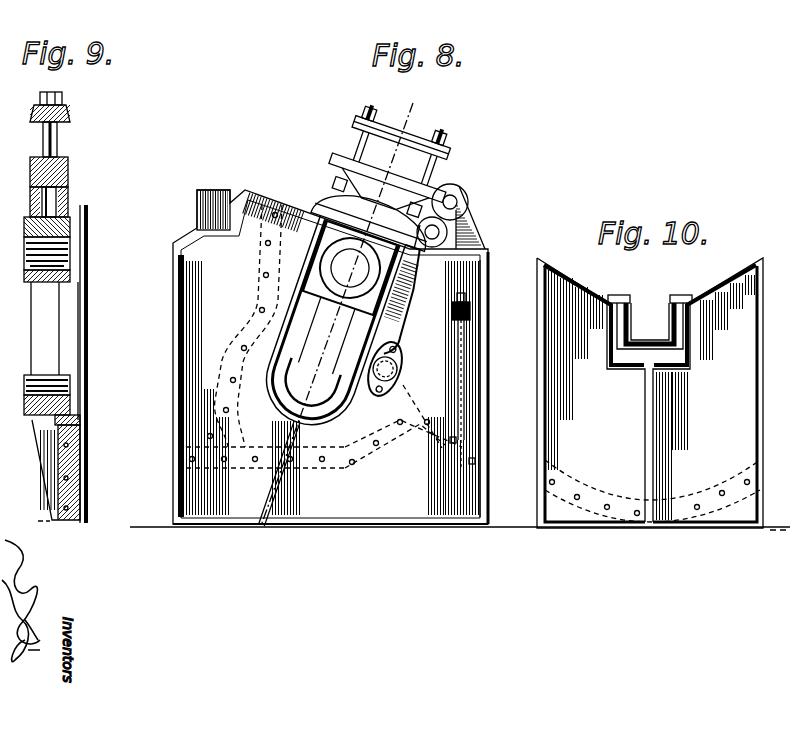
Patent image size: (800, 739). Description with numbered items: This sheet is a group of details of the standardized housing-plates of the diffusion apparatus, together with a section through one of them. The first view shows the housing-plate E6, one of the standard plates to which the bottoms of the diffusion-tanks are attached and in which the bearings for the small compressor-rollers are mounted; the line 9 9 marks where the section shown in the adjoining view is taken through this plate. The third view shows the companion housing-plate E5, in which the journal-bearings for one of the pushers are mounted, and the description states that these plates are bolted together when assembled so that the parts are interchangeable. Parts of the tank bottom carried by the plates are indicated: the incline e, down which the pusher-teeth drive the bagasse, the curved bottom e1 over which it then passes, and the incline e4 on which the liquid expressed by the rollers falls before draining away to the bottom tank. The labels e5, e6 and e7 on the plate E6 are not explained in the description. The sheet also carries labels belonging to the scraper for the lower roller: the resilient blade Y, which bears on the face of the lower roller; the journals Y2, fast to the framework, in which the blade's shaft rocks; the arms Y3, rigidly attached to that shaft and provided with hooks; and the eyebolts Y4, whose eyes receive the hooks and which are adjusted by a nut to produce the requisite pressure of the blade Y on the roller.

In FIG. 8, the section line 9- 9 is at (340, 319).
In FIG. 8, the block at corner of casing e7 is at (214, 192).
In FIG. 8, the resilient blade Y is at (403, 302).
In FIG. 9, the cylinder body / rod e6 is at (37, 318).
In FIG. 8, the cylinder body / rod e6 is at (329, 326).
In FIG. 8, the journals Y2 is at (410, 369).
In FIG. 8, the arms Y3 is at (470, 304).
In FIG. 8, the eyebolts Y4 is at (472, 362).
In FIG. 8, the incline e is at (481, 443).
In FIG. 8, the incline e4 is at (403, 430).
In FIG. 8, the pipe e5 is at (265, 351).
In FIG. 9, the housing-plate E6 is at (97, 370).
In FIG. 8, the housing-plate E6 is at (350, 508).
In FIG. 10, the housing-plate E5 is at (650, 398).
In FIG. 10, the curved bottom e1 is at (590, 497).